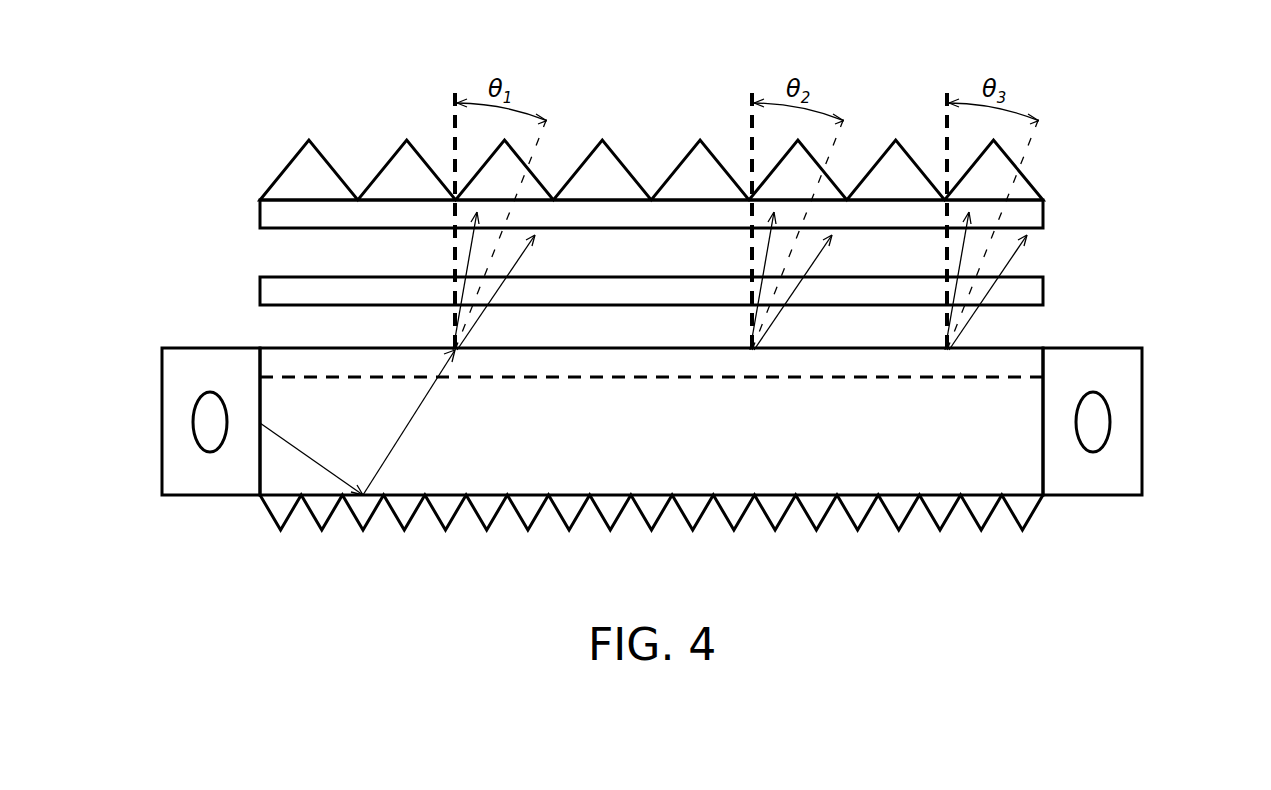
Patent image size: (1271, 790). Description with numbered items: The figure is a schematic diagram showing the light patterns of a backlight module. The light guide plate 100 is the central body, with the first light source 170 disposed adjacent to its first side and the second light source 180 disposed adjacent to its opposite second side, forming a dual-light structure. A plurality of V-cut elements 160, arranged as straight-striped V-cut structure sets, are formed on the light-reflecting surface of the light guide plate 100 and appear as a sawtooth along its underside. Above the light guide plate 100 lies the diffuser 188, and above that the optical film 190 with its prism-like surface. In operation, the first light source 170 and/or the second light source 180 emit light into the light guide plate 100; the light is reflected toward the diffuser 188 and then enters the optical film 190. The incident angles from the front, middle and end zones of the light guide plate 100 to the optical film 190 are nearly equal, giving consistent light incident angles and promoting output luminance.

The light guide plate 100 is at (787, 441).
The V-cut element 160 is at (858, 531).
The first light source 170 is at (177, 423).
The second light source 180 is at (1130, 423).
The diffuser 188 is at (1030, 290).
The optical film 190 is at (1030, 213).